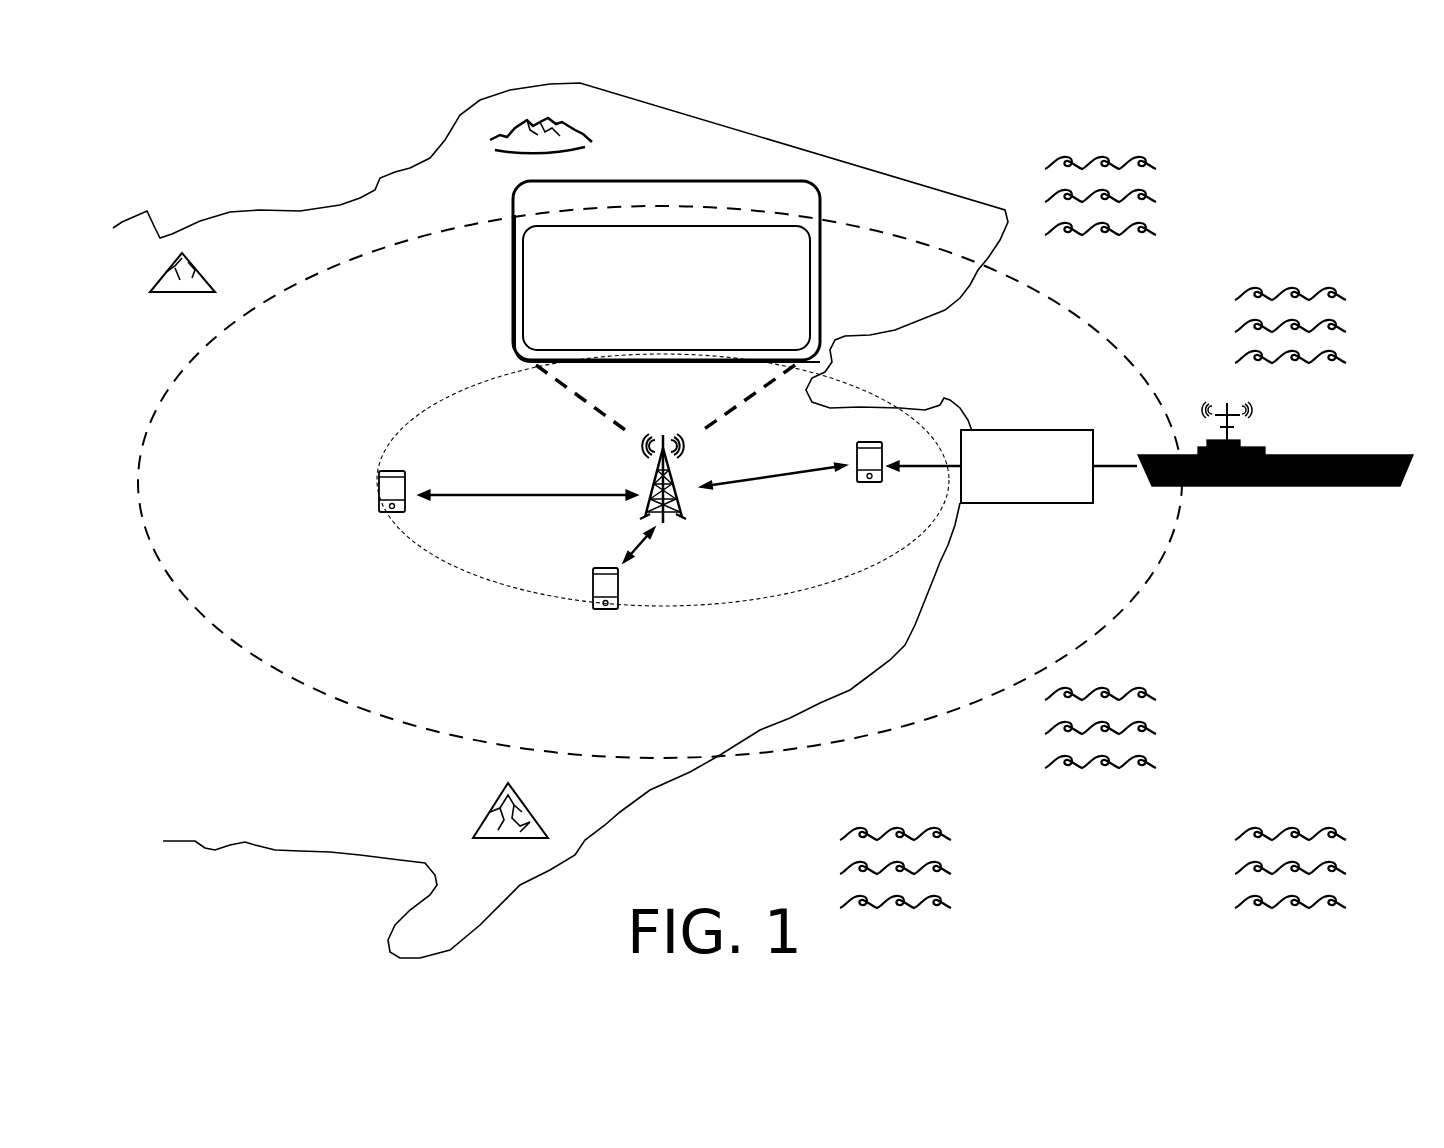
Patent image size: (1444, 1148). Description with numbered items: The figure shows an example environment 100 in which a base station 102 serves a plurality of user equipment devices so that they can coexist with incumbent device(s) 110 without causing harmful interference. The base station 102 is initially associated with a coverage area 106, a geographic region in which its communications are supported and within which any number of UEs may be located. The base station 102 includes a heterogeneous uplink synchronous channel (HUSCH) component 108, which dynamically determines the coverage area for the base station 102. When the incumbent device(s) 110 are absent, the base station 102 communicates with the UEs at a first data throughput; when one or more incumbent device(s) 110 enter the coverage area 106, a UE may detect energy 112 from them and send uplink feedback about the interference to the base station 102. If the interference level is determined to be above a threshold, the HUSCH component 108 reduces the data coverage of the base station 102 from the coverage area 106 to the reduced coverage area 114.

The environment 100 is at (1362, 72).
The base station 102 is at (765, 217).
The coverage area 106 is at (305, 685).
The heterogeneous uplink synchronous channel (HUSCH) component 108 is at (686, 342).
The incumbent device(s) 110 is at (1232, 486).
The energy 112 is at (1048, 500).
The reduced coverage area 114 is at (672, 605).